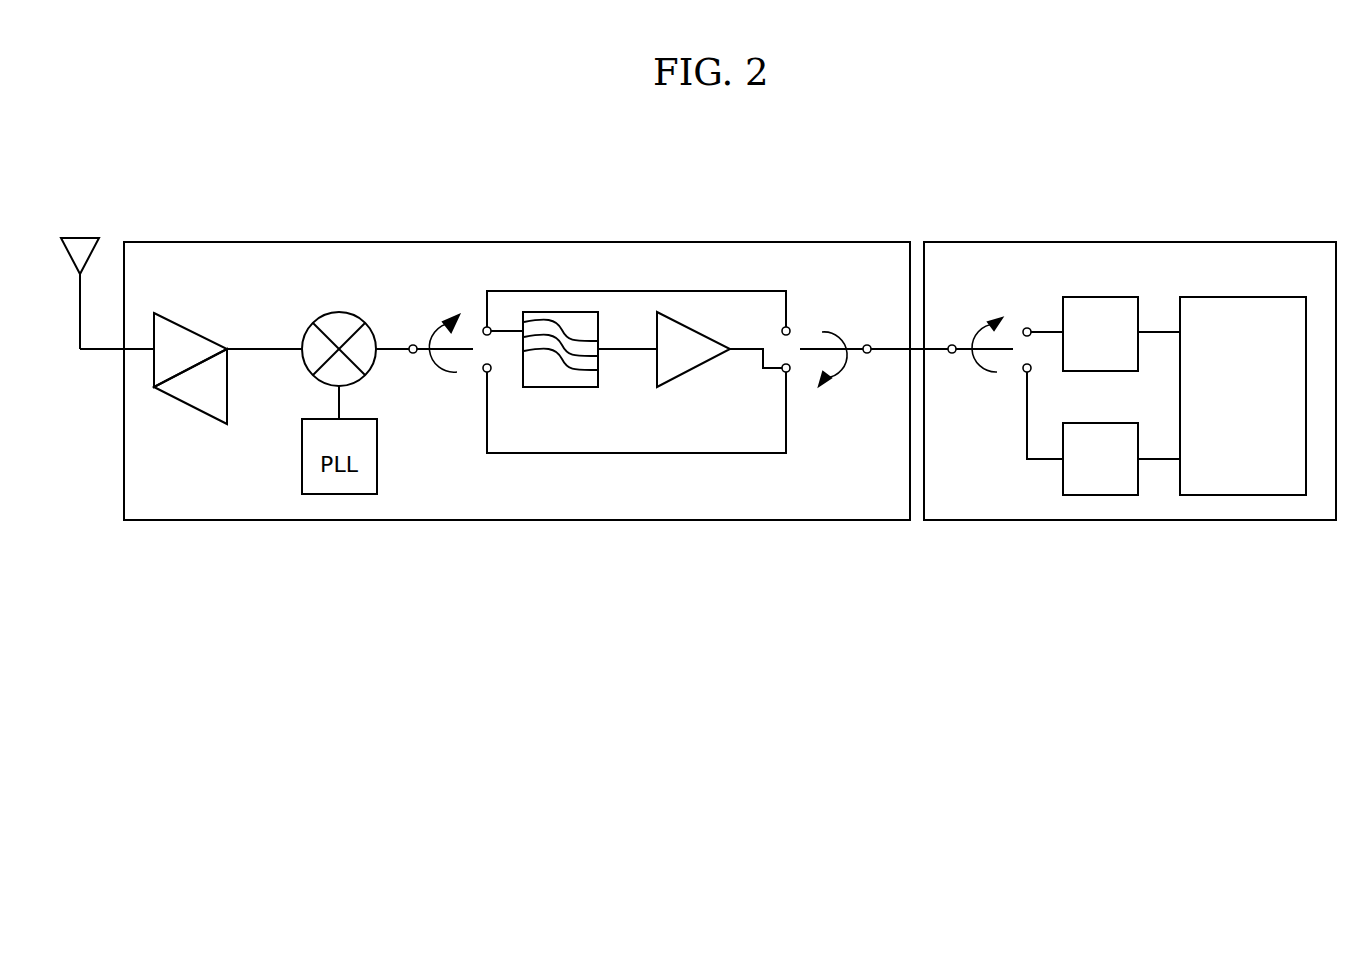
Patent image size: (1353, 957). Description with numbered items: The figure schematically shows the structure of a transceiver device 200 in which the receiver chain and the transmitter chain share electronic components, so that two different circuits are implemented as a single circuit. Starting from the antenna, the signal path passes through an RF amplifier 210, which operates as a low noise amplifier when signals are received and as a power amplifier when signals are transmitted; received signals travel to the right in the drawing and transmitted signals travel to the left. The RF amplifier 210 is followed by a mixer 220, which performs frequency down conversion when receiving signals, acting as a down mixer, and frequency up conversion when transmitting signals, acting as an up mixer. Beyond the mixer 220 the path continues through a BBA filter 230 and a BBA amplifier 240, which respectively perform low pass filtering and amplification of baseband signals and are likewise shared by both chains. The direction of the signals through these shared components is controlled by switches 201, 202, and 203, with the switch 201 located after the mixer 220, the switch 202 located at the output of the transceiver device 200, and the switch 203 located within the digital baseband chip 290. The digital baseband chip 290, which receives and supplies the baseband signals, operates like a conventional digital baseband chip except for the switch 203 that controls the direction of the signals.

The transceiver device 200 is at (523, 242).
The RF amplifier 210 is at (193, 328).
The mixer 220 is at (340, 312).
The switch 201 is at (428, 353).
The BBA filter 230 is at (560, 387).
The BBA amplifier 240 is at (697, 370).
The switch 202 is at (853, 353).
The switch 203 is at (970, 353).
The digital baseband chip 290 is at (1140, 240).